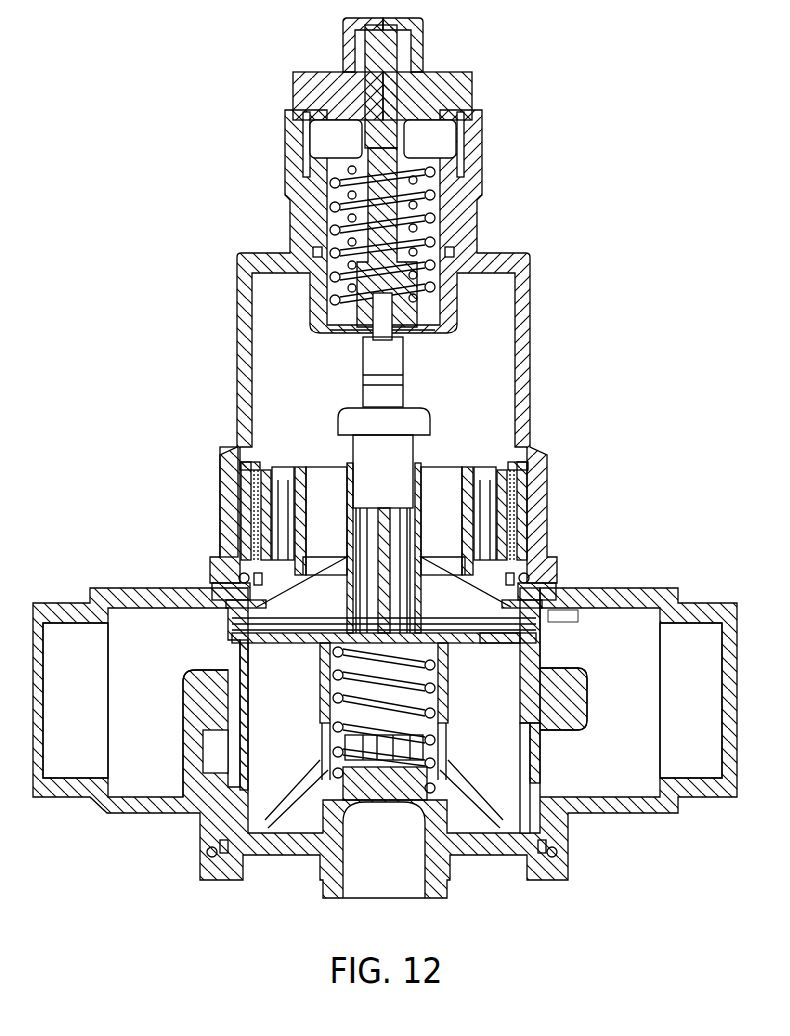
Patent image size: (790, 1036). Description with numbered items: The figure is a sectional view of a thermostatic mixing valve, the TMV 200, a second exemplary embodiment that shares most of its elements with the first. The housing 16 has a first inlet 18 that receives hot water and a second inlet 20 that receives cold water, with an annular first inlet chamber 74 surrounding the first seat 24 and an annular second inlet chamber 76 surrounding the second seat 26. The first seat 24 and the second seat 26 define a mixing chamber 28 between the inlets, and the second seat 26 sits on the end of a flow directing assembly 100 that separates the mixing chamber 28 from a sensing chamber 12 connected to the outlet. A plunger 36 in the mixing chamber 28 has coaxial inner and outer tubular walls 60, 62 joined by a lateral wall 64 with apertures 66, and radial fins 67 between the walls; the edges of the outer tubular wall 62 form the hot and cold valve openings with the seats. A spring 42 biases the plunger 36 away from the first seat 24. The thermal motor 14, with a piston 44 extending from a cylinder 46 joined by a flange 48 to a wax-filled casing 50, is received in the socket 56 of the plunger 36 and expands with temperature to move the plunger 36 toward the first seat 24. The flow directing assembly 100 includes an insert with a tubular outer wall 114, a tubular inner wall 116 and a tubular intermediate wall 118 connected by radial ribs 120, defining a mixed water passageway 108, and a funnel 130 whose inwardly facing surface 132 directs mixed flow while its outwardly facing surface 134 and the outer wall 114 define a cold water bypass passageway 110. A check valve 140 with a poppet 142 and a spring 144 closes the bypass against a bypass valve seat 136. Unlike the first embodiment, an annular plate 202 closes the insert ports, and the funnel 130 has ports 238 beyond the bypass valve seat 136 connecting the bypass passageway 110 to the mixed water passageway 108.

The sensing chamber 12 is at (471, 350).
The thermal motor 14 is at (427, 406).
The housing 16 is at (533, 264).
The first inlet 18 is at (682, 707).
The second inlet 20 is at (60, 707).
The first seat 24 is at (573, 816).
The second seat 26 is at (580, 668).
The mixing chamber 28 is at (312, 850).
The plunger 36 is at (541, 754).
The spring 42 is at (433, 743).
The piston 44 is at (380, 312).
The cylinder 46 is at (395, 388).
The flange 48 is at (423, 427).
The casing 50 is at (407, 448).
The socket 56 is at (417, 633).
The inner tubular wall 60 is at (320, 720).
The outer tubular wall 62 is at (242, 755).
The lateral wall 64 is at (452, 648).
The apertures 66 is at (517, 644).
The radial fins 67 is at (508, 823).
The first inlet chamber 74 is at (213, 782).
The second inlet chamber 76 is at (580, 623).
The flow directing assembly 100 is at (517, 538).
The mixed water passageway 108 is at (323, 475).
The cold water bypass passageway 110 is at (255, 595).
The tubular outer wall 114 is at (250, 523).
The tubular inner wall 116 is at (440, 538).
The tubular intermediate wall 118 is at (233, 452).
The radial ribs 120 is at (520, 490).
The funnel 130 is at (555, 605).
The inwardly facing surface 132 is at (256, 625).
The outwardly facing surface 134 is at (237, 592).
The bypass valve seat 136 is at (520, 600).
The check valve 140 is at (523, 550).
The poppet 142 is at (530, 575).
The spring 144 is at (528, 503).
The TMV 200 is at (670, 357).
The annular plate 202 is at (270, 468).
The ports 238 is at (300, 605).